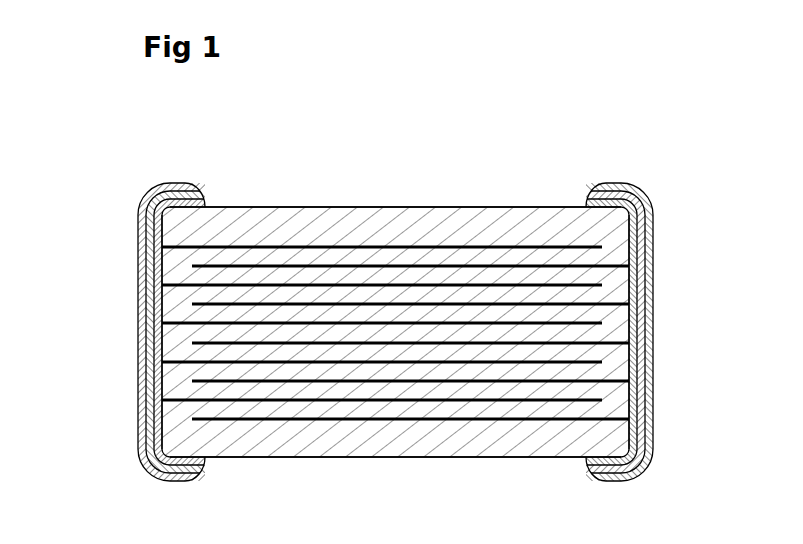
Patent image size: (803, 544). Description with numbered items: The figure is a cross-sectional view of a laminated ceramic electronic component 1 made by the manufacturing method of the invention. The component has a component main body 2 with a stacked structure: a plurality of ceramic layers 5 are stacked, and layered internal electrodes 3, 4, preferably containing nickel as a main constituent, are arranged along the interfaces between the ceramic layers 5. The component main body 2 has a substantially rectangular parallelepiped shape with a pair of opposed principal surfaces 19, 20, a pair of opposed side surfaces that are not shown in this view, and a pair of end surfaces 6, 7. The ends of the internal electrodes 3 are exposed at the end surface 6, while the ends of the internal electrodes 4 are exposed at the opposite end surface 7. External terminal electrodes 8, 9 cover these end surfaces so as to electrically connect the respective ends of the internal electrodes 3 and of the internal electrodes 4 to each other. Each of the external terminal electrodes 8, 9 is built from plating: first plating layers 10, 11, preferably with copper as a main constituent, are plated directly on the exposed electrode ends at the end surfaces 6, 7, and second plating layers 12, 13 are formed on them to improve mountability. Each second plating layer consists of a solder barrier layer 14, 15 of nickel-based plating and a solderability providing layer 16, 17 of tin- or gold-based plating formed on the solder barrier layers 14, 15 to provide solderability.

The laminated ceramic electronic component 1 is at (214, 130).
The component main body 2 is at (388, 331).
The internal electrodes 3 is at (353, 284).
The internal electrodes 4 is at (475, 303).
The ceramic layers 5 is at (415, 275).
The end surface 6 is at (160, 342).
The end surface 7 is at (630, 324).
The external terminal electrode 8 is at (111, 332).
The external terminal electrode 9 is at (675, 332).
The first plating layer 10 is at (157, 227).
The first plating layer 11 is at (636, 231).
The second plating layer 12 is at (124, 332).
The second plating layer 13 is at (661, 332).
The solder barrier layer 14 is at (148, 247).
The solder barrier layer 15 is at (643, 267).
The solderability providing layer 16 is at (87, 232).
The solderability providing layer 17 is at (701, 255).
The principal surface 19 is at (293, 207).
The principal surface 20 is at (345, 458).